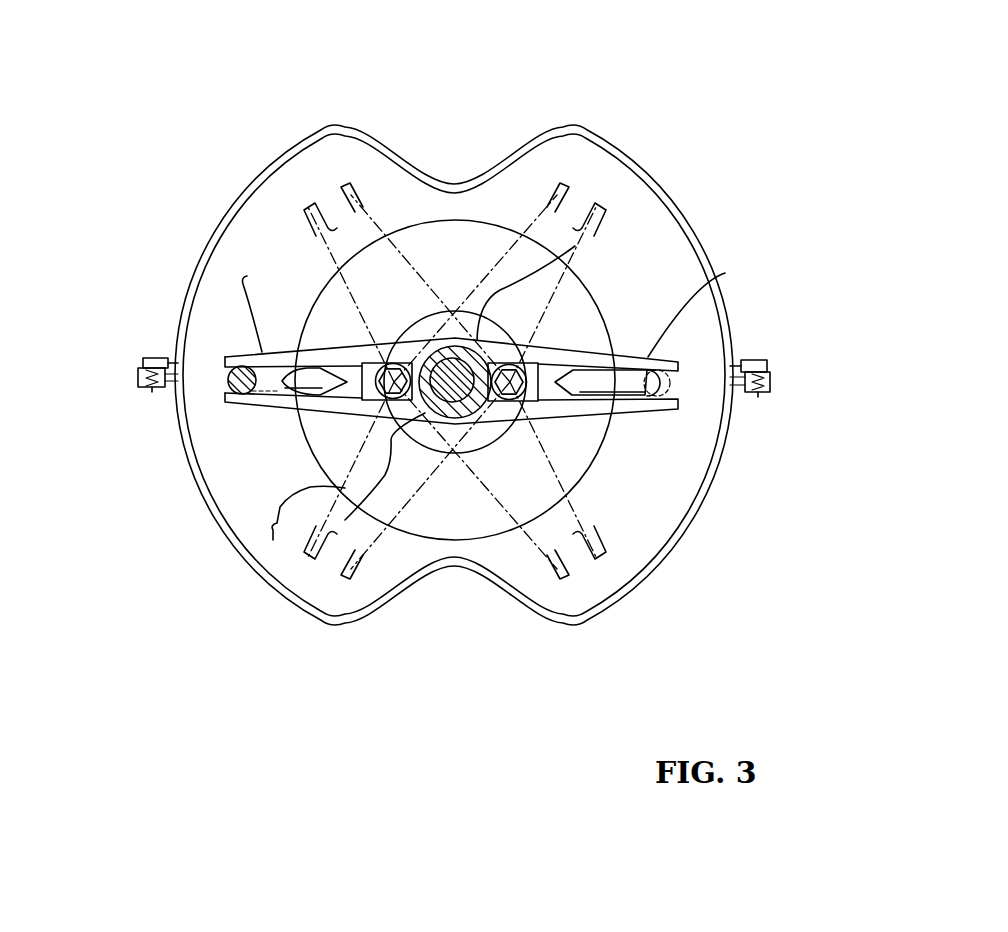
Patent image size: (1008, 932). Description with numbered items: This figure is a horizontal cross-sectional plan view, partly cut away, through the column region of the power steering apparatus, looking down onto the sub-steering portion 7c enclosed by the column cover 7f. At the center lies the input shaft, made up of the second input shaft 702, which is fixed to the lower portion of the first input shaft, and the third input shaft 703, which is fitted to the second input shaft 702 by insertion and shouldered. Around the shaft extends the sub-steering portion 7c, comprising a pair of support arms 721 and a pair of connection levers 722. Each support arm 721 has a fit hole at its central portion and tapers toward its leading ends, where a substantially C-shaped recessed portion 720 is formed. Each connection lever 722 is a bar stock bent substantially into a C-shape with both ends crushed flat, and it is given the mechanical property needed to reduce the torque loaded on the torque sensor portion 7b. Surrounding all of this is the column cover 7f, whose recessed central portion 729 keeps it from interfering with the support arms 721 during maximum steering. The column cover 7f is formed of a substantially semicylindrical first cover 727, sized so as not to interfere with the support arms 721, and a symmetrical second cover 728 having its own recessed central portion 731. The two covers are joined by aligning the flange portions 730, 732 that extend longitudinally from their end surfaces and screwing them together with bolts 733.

The column cover 7f is at (627, 144).
The torque sensor portion 7b is at (273, 540).
The sub-steering portion 7c is at (725, 273).
The second input shaft 702 is at (575, 246).
The third input shaft 703 is at (345, 520).
The recessed portion 720 is at (233, 400).
The support arm 721 is at (247, 276).
The connection lever 722 is at (366, 347).
The first cover 727 is at (732, 328).
The second cover 728 is at (725, 460).
The central portion 729 is at (472, 160).
The flange portion 730 is at (140, 370).
The recessed central portion 731 is at (450, 600).
The flange portion 732 is at (140, 388).
The bolt 733 is at (148, 364).